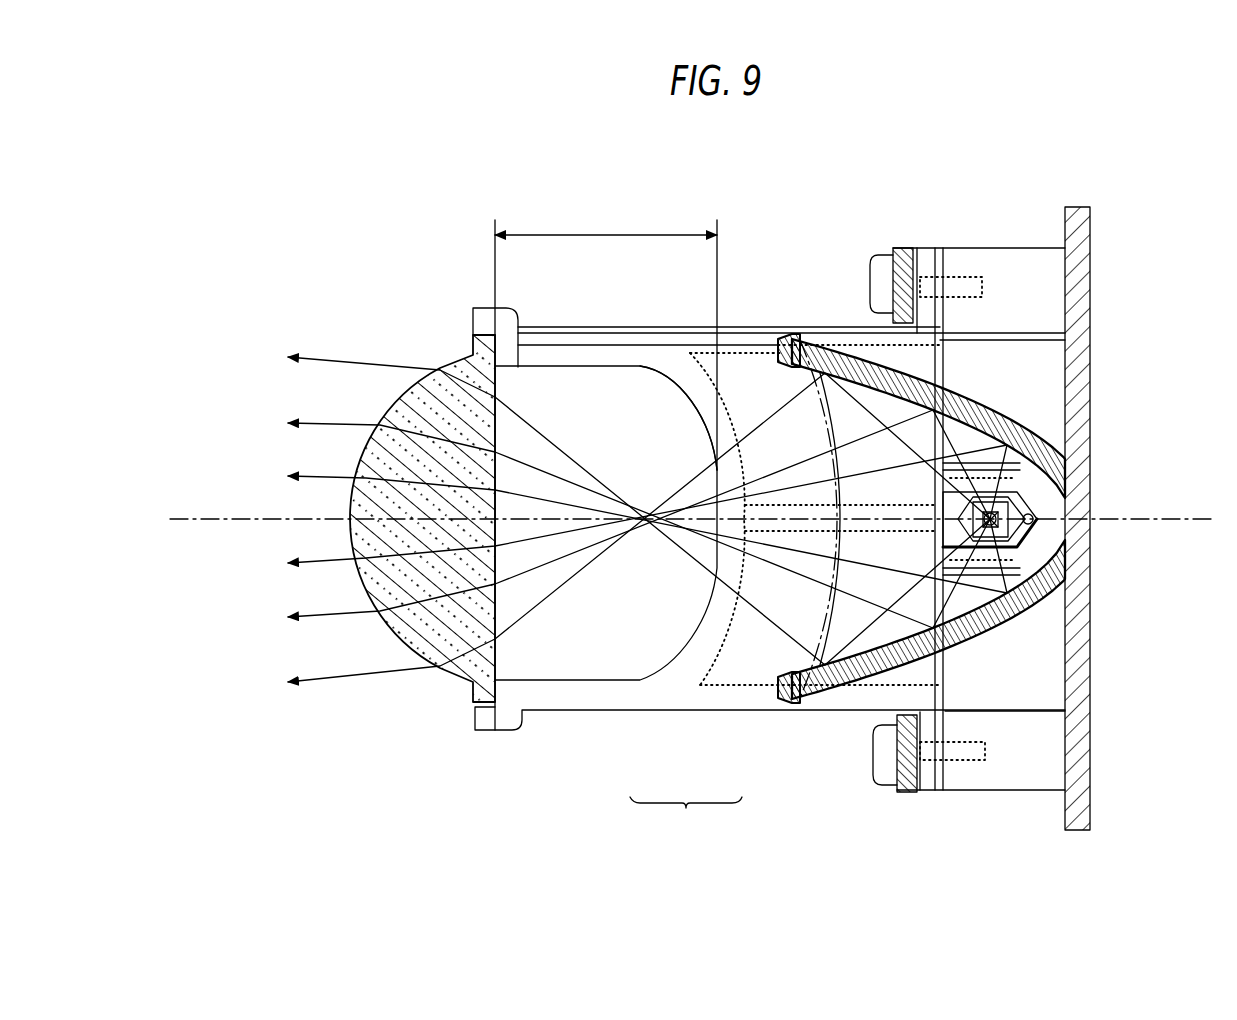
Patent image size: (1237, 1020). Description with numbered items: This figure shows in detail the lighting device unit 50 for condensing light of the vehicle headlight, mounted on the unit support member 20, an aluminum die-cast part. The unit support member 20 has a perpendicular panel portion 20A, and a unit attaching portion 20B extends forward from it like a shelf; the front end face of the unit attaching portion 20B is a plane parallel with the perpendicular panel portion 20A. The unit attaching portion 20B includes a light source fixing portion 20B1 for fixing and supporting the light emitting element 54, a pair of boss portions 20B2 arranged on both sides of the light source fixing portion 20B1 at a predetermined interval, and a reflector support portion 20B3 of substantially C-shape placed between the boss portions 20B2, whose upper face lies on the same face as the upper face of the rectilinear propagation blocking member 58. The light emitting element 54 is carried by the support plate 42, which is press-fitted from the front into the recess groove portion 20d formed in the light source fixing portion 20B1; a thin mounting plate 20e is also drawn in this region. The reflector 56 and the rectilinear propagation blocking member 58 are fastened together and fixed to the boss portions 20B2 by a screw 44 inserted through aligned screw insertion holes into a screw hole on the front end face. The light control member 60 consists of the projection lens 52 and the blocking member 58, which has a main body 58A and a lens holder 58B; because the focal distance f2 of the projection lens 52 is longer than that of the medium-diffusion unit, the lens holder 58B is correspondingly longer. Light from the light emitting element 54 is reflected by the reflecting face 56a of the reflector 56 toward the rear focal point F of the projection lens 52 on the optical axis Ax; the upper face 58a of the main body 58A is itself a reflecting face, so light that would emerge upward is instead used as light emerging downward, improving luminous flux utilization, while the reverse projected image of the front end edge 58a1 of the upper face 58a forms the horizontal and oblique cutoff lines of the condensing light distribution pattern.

The unit support member 20 is at (1121, 518).
The perpendicular panel portion 20A is at (1100, 606).
The unit attaching portion 20B is at (1023, 520).
The light source fixing portion 20B1 is at (1003, 413).
The boss portion 20B2 is at (1035, 270).
The reflector support portion 20B3 is at (1037, 657).
The recess groove portion 20d is at (1045, 522).
The mounting plate 20e is at (957, 410).
The support plate 42 is at (892, 600).
The screw 44 is at (878, 292).
The lighting device unit for condensing light 50 is at (443, 249).
The projection lens 52 is at (438, 362).
The light emitting element 54 is at (1023, 493).
The reflector 56 is at (961, 492).
The reflecting face 56a is at (877, 405).
The rectilinear propagation blocking member 58 is at (769, 547).
The main body 58A is at (772, 667).
The lens holder 58B is at (607, 698).
The upper face 58a is at (747, 375).
The front end edge 58a1 is at (654, 405).
The light control member 60 is at (471, 720).
The rear focal point F is at (670, 543).
The focal distance f2 is at (606, 338).
The optical axis Ax is at (262, 518).